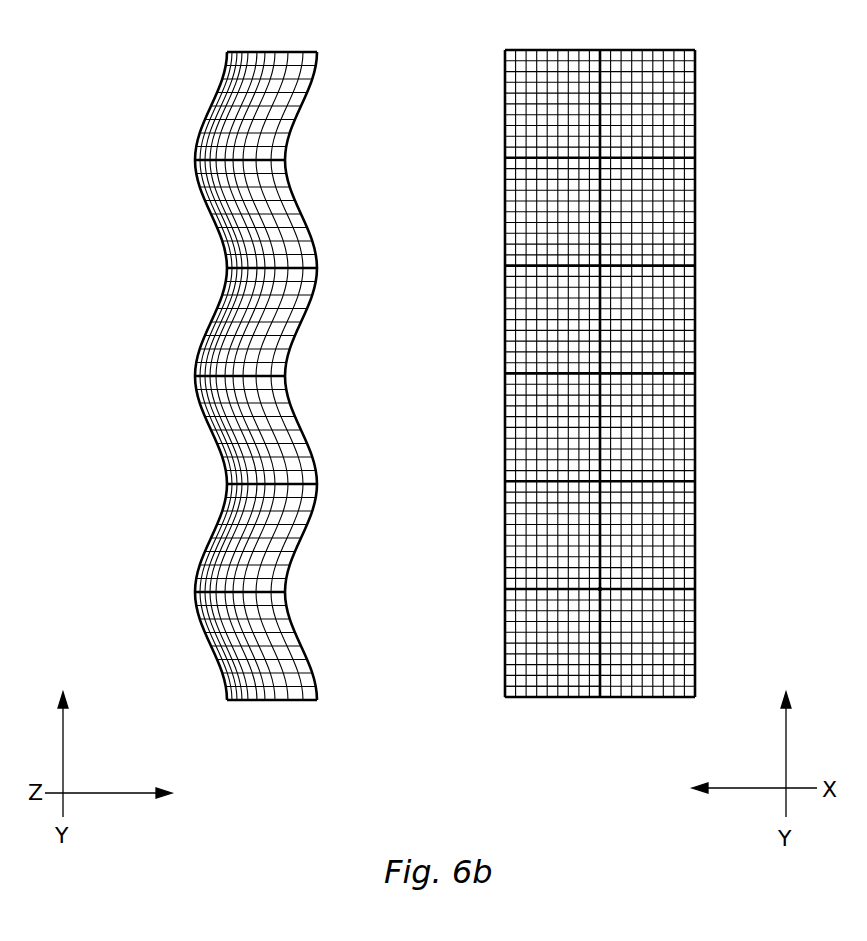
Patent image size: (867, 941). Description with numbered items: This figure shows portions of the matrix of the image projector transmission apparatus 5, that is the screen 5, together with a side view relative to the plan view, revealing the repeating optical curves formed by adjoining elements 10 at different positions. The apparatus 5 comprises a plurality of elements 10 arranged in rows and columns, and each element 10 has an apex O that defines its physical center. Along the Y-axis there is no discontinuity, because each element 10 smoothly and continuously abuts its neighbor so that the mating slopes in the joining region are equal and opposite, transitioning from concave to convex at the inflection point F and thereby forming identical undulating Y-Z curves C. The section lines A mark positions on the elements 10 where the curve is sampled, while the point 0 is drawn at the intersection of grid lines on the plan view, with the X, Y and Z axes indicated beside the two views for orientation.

The element 10 is at (678, 100).
The origin point 0 is at (602, 589).
The image projector transmission apparatus 5 is at (525, 688).
The section line A is at (230, 52).
The apex O is at (197, 160).
The inflection point F is at (214, 531).
The undulating Y-Z curve C is at (228, 698).